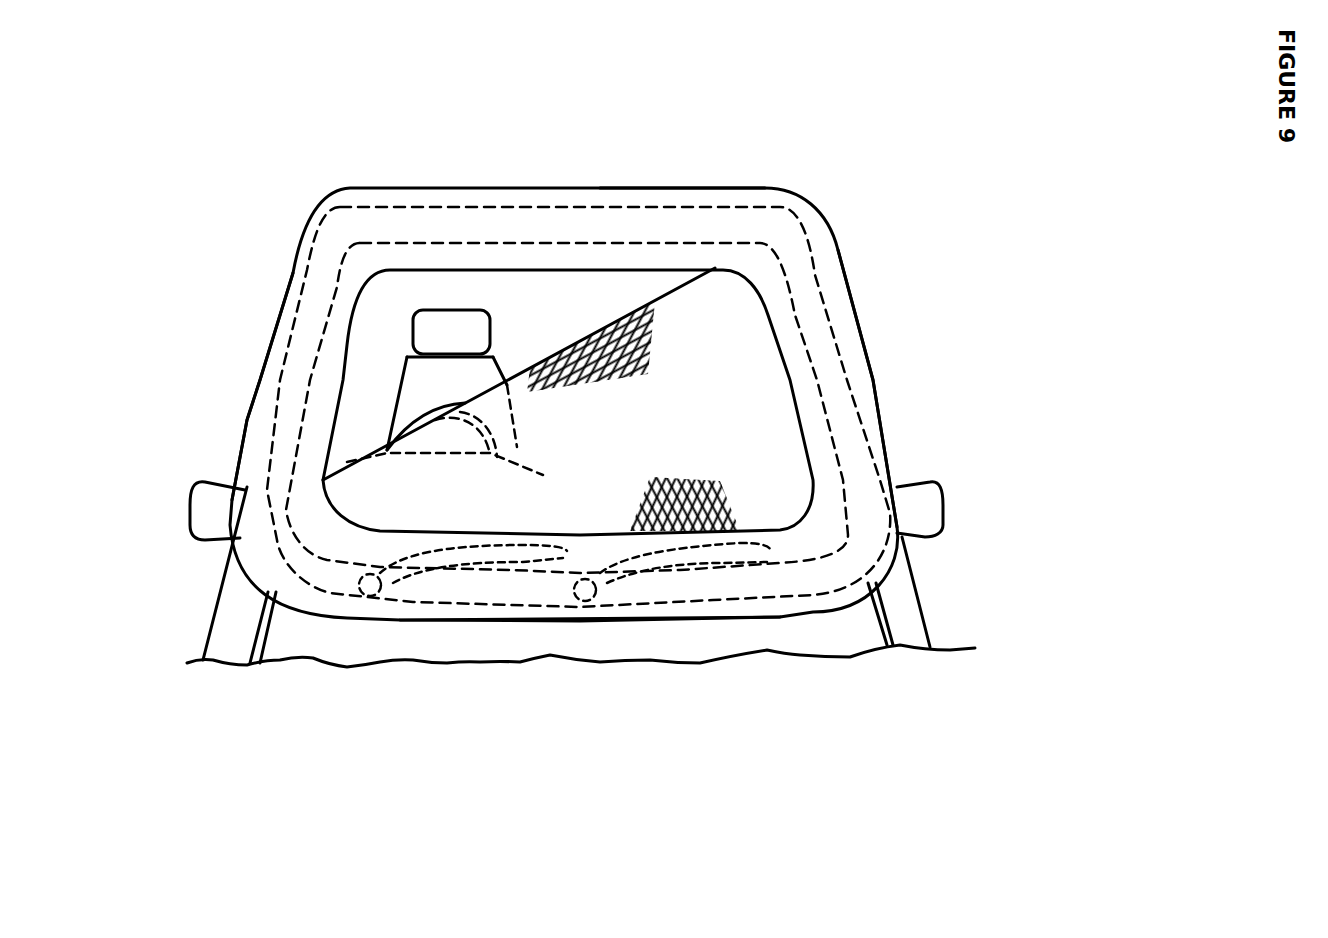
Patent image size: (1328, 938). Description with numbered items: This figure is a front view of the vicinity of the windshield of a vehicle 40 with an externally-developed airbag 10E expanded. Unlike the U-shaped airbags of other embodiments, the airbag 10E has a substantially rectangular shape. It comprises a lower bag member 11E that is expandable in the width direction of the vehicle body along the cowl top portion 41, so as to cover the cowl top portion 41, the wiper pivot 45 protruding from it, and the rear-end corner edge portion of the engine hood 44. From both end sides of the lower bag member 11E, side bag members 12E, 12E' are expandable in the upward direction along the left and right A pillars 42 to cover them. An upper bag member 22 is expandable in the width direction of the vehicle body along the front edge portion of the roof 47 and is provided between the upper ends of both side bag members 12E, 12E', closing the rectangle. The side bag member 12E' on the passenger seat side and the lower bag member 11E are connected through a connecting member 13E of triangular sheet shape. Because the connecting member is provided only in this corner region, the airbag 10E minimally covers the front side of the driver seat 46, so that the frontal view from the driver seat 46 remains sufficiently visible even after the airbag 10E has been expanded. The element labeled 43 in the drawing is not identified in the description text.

The airbag 10E is at (836, 208).
The upper bag member 22 is at (693, 187).
The side bag member 12E is at (246, 363).
The side bag member 12E' is at (906, 388).
The roof 47 is at (593, 213).
The A pillar 42 is at (290, 403).
The window frame 43 is at (377, 307).
The connecting member 13E is at (747, 310).
The driver seat 46 is at (430, 322).
The wiper pivot 45 is at (350, 610).
The lower bag member 11E is at (628, 613).
The vehicle 40 is at (190, 611).
The cowl top portion 41 is at (905, 578).
The engine hood 44 is at (833, 633).